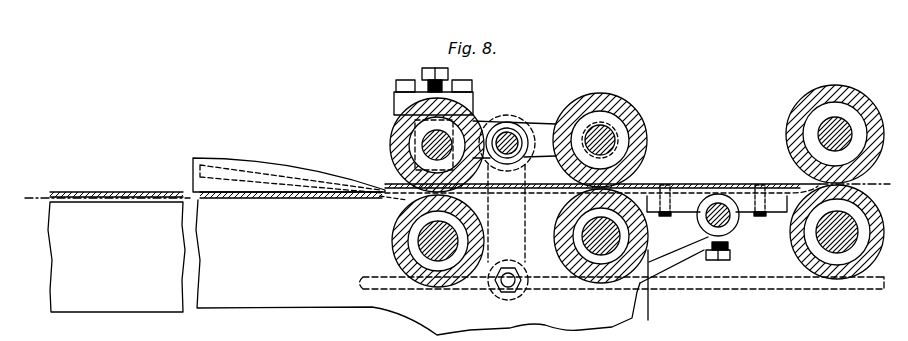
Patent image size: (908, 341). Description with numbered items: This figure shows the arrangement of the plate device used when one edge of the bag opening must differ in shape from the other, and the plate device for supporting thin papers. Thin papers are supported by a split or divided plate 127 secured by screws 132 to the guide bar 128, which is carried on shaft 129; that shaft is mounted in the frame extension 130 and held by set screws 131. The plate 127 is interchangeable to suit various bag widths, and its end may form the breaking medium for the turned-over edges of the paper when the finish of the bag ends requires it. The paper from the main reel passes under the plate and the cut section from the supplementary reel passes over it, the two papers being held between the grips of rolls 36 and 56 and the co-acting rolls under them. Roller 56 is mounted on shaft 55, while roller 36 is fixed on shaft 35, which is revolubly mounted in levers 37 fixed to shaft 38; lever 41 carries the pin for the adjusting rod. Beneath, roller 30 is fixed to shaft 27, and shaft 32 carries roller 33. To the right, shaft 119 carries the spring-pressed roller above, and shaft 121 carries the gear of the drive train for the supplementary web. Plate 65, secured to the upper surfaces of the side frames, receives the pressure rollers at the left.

The shaft 27 is at (423, 244).
The roller 30 is at (397, 232).
The shaft 32 is at (602, 252).
The roller 33 is at (557, 248).
The shaft 35 is at (608, 130).
The roller 36 is at (606, 167).
The lever 37 is at (543, 122).
The shaft 38 is at (507, 122).
The lever 41 is at (522, 242).
The shaft 55 is at (425, 142).
The roller 56 is at (397, 148).
The plate 65 is at (117, 203).
The shaft 119 is at (826, 133).
The shaft 121 is at (843, 240).
The split or divided plate 127 is at (77, 195).
The guide bar 128 is at (740, 215).
The shaft 129 is at (705, 213).
The frame extension 130 is at (677, 262).
The set screw 131 is at (724, 262).
The screw 132 is at (668, 186).